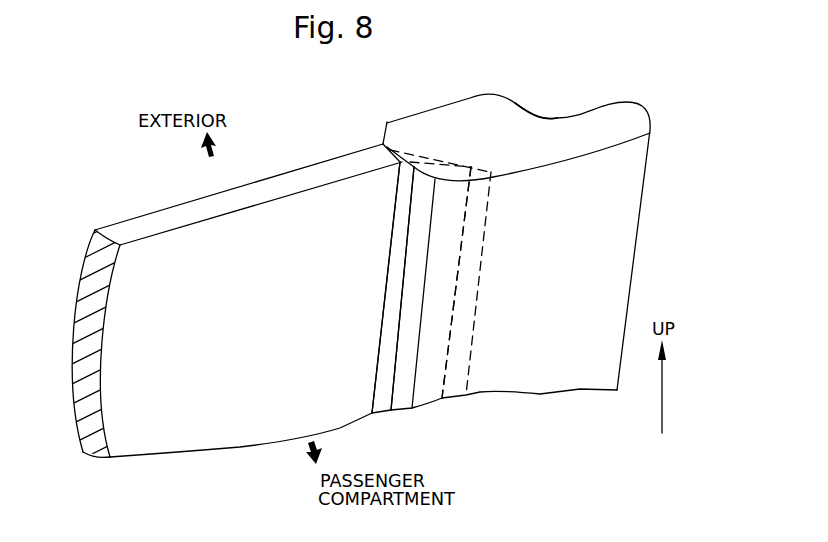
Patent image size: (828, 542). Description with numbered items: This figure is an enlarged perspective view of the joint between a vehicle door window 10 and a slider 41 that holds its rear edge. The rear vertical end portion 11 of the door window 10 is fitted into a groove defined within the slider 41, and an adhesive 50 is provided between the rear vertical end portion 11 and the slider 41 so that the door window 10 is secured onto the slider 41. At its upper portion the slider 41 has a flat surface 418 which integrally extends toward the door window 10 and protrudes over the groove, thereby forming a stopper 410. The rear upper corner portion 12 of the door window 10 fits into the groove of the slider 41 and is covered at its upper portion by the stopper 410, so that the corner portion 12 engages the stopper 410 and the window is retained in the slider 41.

The door window 10 is at (262, 195).
The rear vertical end portion 11 is at (449, 318).
The rear upper corner portion 12 is at (425, 156).
The slider 41 is at (647, 187).
The stopper 410 is at (378, 132).
The flat surface 418 is at (513, 117).
The adhesive 50 is at (381, 400).